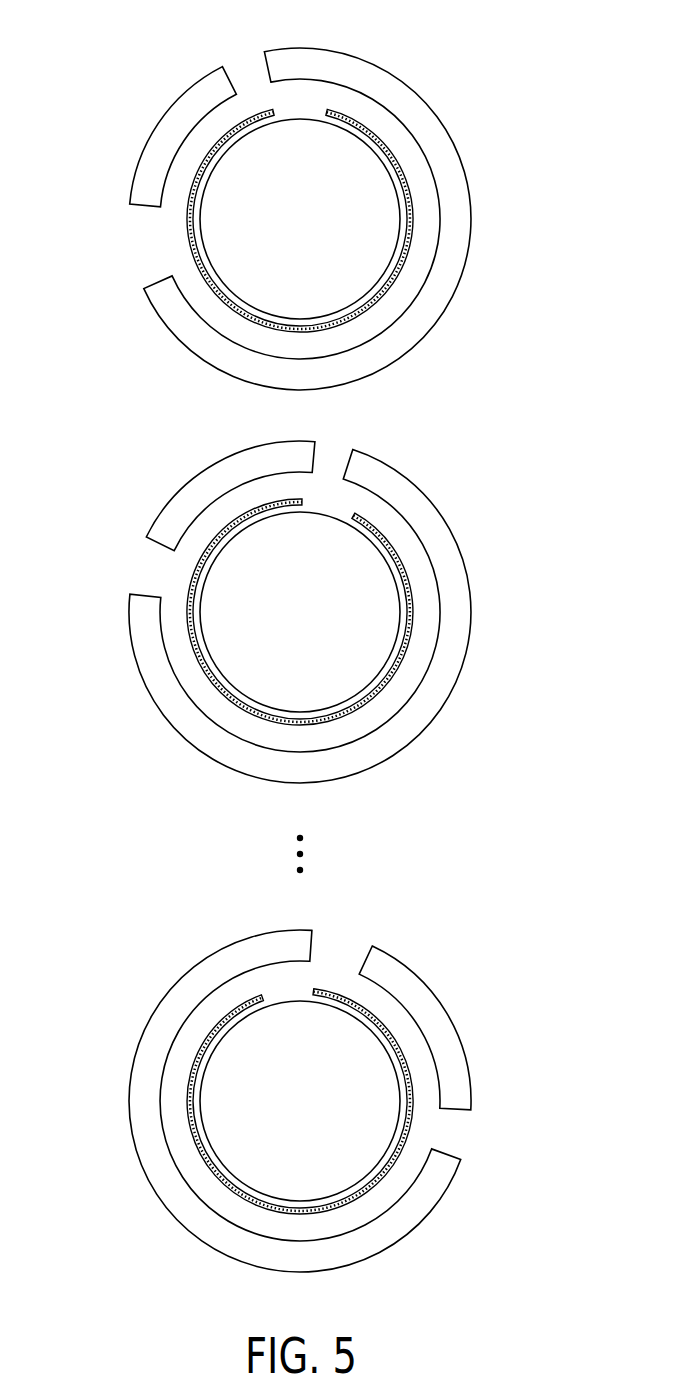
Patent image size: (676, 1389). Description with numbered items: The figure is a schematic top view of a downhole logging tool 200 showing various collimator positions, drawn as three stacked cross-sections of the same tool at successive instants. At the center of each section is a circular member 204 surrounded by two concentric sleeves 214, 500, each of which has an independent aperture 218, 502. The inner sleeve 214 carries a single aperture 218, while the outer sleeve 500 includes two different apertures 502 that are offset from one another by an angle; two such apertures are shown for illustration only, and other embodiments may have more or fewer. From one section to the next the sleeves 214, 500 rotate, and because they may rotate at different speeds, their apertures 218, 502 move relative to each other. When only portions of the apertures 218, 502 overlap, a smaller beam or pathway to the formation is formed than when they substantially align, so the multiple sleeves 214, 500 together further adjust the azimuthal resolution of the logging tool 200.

The logging tool 200 is at (450, 65).
The inner tube 204 is at (367, 272).
The sleeve 214 is at (188, 230).
The aperture 218 is at (292, 112).
The sleeve 500 is at (447, 175).
The aperture 502 is at (250, 68).